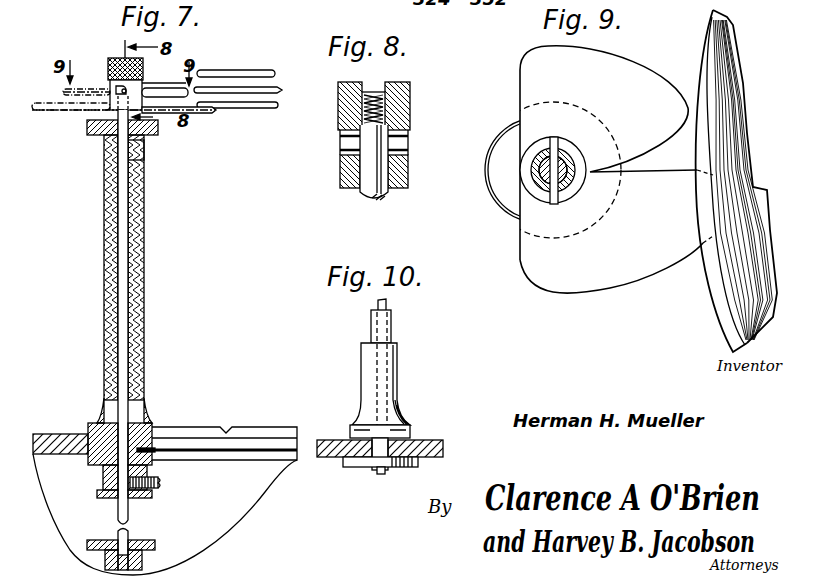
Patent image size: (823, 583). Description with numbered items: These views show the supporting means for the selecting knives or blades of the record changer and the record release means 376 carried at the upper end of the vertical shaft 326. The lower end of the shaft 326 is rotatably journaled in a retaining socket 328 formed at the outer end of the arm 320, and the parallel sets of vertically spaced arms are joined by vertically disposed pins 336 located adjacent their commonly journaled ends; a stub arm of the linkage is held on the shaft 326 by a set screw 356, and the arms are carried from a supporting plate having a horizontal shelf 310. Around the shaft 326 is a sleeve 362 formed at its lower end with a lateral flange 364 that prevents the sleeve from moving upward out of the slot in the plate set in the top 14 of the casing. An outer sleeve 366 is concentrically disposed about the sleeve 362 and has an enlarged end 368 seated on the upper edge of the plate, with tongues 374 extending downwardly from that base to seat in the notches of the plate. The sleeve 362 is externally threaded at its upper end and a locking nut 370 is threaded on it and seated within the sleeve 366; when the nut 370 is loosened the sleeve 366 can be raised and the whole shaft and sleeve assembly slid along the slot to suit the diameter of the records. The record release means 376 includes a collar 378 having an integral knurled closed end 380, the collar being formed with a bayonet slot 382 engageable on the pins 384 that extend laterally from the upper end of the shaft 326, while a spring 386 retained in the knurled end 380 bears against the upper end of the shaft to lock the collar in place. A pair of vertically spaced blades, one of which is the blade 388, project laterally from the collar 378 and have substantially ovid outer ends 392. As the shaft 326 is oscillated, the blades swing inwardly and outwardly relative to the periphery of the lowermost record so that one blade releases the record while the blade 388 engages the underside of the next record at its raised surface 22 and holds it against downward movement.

In FIG. 7, the knurled closed end 380 is at (108, 72).
In FIG. 7, the pins 384 is at (120, 90).
In FIG. 7, the collar 378 is at (108, 97).
In FIG. 7, the locking nut 370 is at (138, 154).
In FIG. 7, the outer sleeve 366 is at (142, 300).
In FIG. 10, the outer sleeve 366 is at (393, 373).
In FIG. 7, the sleeve 362 is at (130, 342).
In FIG. 10, the sleeve 362 is at (403, 429).
In FIG. 7, the vertical shaft 326 is at (122, 375).
In FIG. 8, the vertical shaft 326 is at (552, 176).
In FIG. 9, the vertical shaft 326 is at (537, 170).
In FIG. 7, the enlarged end 368 is at (100, 417).
In FIG. 10, the enlarged end 368 is at (356, 428).
In FIG. 7, the tongues 374 is at (147, 415).
In FIG. 7, the lateral flange 364 is at (140, 449).
In FIG. 10, the lateral flange 364 is at (353, 461).
In FIG. 7, the arm 320 is at (190, 457).
In FIG. 7, the set screw 356 is at (161, 484).
In FIG. 7, the retaining socket 328 is at (147, 559).
In FIG. 8, the spring 386 is at (384, 101).
In FIG. 8, the bayonet slot 382 is at (408, 146).
In FIG. 9, the blade 388 is at (645, 87).
In FIG. 9, the ovid outer ends 392 is at (670, 143).
In FIG. 9, the shelf 310 is at (590, 289).
In FIG. 9, the record release means 376 is at (622, 291).
In FIG. 9, the annular raised surface 22 is at (730, 326).
In FIG. 10, the top 14 is at (436, 450).
In FIG. 10, the pins 336 is at (380, 474).